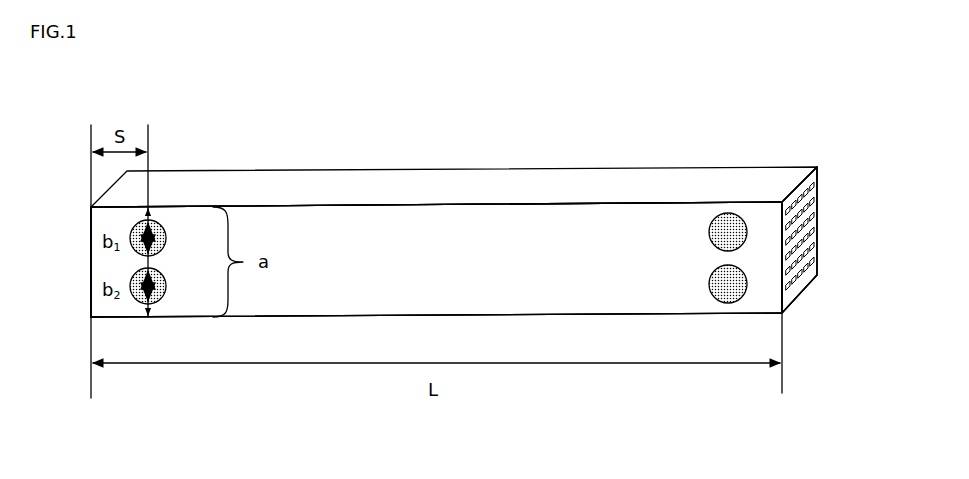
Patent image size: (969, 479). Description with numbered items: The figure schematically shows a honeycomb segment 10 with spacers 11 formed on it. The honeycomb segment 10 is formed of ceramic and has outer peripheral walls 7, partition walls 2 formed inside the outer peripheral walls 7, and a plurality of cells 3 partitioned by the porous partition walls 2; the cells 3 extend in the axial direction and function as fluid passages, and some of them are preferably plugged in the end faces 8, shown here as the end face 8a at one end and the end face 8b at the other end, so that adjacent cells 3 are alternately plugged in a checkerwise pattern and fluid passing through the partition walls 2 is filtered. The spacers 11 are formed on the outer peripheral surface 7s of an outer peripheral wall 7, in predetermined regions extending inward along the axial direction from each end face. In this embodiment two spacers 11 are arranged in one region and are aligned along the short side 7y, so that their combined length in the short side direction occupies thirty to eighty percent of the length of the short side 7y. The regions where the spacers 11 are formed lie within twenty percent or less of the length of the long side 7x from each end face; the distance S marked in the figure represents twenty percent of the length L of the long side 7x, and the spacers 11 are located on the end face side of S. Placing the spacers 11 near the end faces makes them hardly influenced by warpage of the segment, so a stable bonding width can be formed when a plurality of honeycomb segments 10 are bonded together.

The honeycomb segment 10 is at (746, 110).
The outer peripheral wall 7 is at (814, 174).
The outer peripheral surface 7s is at (763, 242).
The long side 7x is at (413, 205).
The short side 7y is at (90, 247).
The end face 8 is at (450, 283).
The end face 8a is at (90, 298).
The end face 8b is at (803, 288).
The partition wall 2 is at (814, 194).
The cell 3 is at (812, 219).
The spacer 11 is at (166, 232).